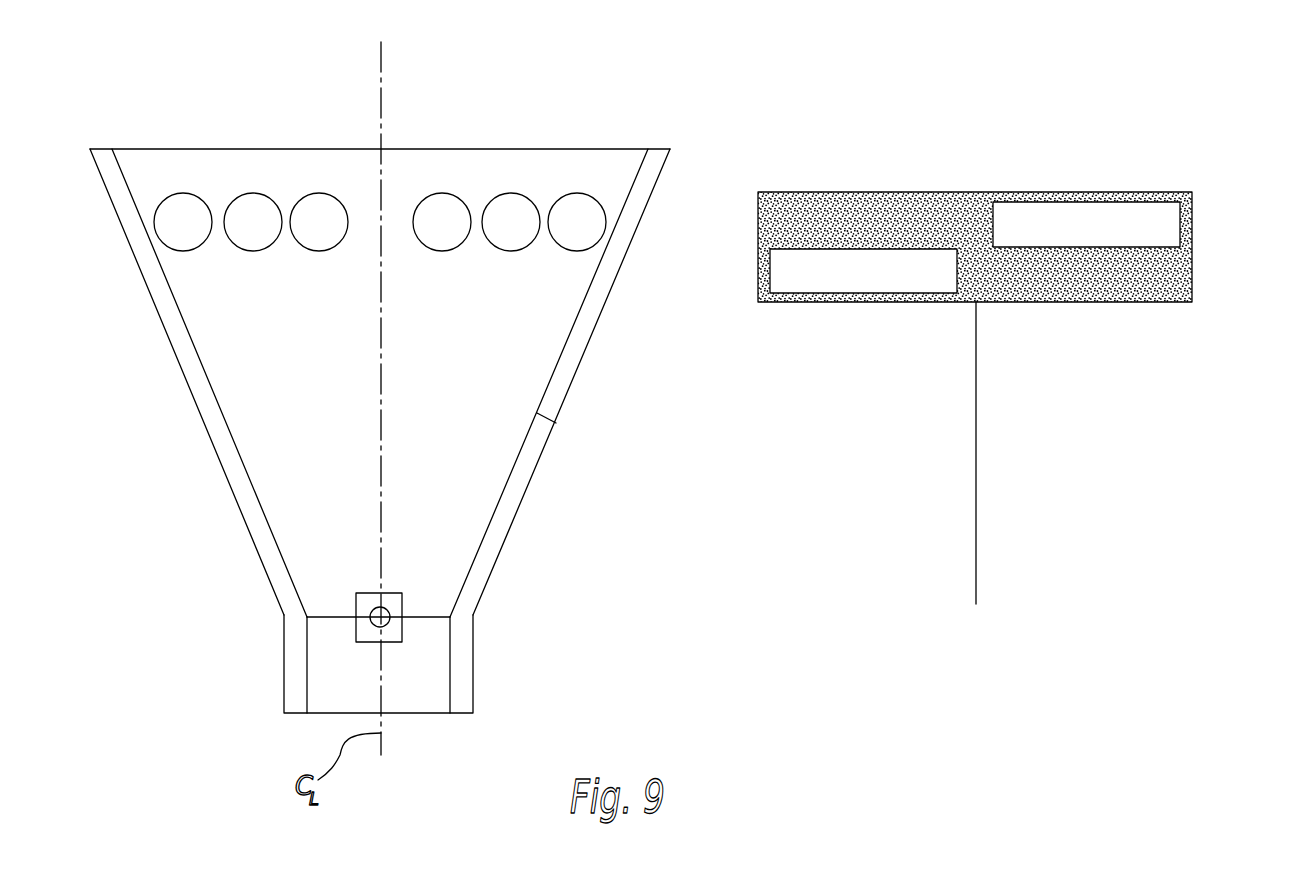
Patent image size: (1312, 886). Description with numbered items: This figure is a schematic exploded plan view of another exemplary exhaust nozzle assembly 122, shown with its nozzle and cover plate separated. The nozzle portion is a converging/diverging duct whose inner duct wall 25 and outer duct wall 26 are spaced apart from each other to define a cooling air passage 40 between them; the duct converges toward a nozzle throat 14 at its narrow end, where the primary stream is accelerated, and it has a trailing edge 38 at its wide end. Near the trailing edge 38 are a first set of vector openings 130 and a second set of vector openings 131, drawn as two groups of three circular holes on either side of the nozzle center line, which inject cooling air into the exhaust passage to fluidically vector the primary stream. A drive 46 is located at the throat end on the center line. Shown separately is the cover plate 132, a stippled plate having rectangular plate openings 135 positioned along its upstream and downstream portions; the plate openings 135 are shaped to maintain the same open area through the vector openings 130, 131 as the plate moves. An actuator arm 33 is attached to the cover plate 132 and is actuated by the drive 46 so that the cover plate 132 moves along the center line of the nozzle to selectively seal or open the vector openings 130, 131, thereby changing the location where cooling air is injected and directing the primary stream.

The nozzle throat 14 is at (436, 617).
The inner duct wall 25 is at (556, 423).
The outer duct wall 26 is at (530, 487).
The actuator arm 33 is at (976, 480).
The trailing edge 38 is at (600, 150).
The cooling air passage 40 is at (585, 327).
The drive 46 is at (356, 640).
The exhaust nozzle assembly 122 is at (1018, 317).
The first set of vector openings 130 is at (319, 218).
The second set of vector openings 131 is at (575, 218).
The cover plate 132 is at (1192, 258).
The plate openings 135 is at (1093, 194).